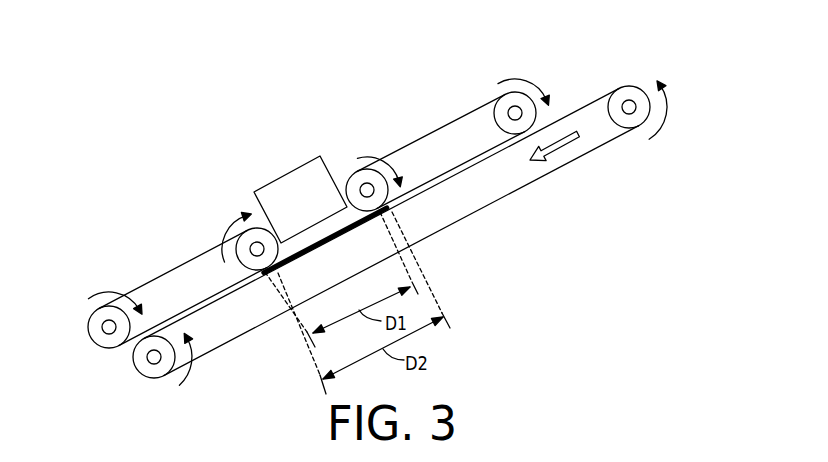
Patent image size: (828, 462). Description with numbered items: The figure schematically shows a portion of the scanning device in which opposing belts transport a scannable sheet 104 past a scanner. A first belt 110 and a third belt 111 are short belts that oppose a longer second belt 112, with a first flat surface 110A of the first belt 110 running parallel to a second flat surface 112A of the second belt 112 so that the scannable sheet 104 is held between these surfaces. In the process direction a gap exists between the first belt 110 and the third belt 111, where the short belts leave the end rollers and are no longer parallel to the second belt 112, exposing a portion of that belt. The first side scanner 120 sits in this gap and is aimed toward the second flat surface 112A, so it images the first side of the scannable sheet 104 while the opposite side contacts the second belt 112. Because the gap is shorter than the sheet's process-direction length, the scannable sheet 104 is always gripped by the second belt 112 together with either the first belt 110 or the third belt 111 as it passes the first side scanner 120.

The scannable sheet 104 is at (338, 236).
The first belt 110 is at (446, 124).
The first flat surface 110A is at (422, 183).
The third belt 111 is at (190, 260).
The second belt 112 is at (500, 198).
The second flat surface 112A is at (578, 109).
The first side scanner 120 is at (288, 174).